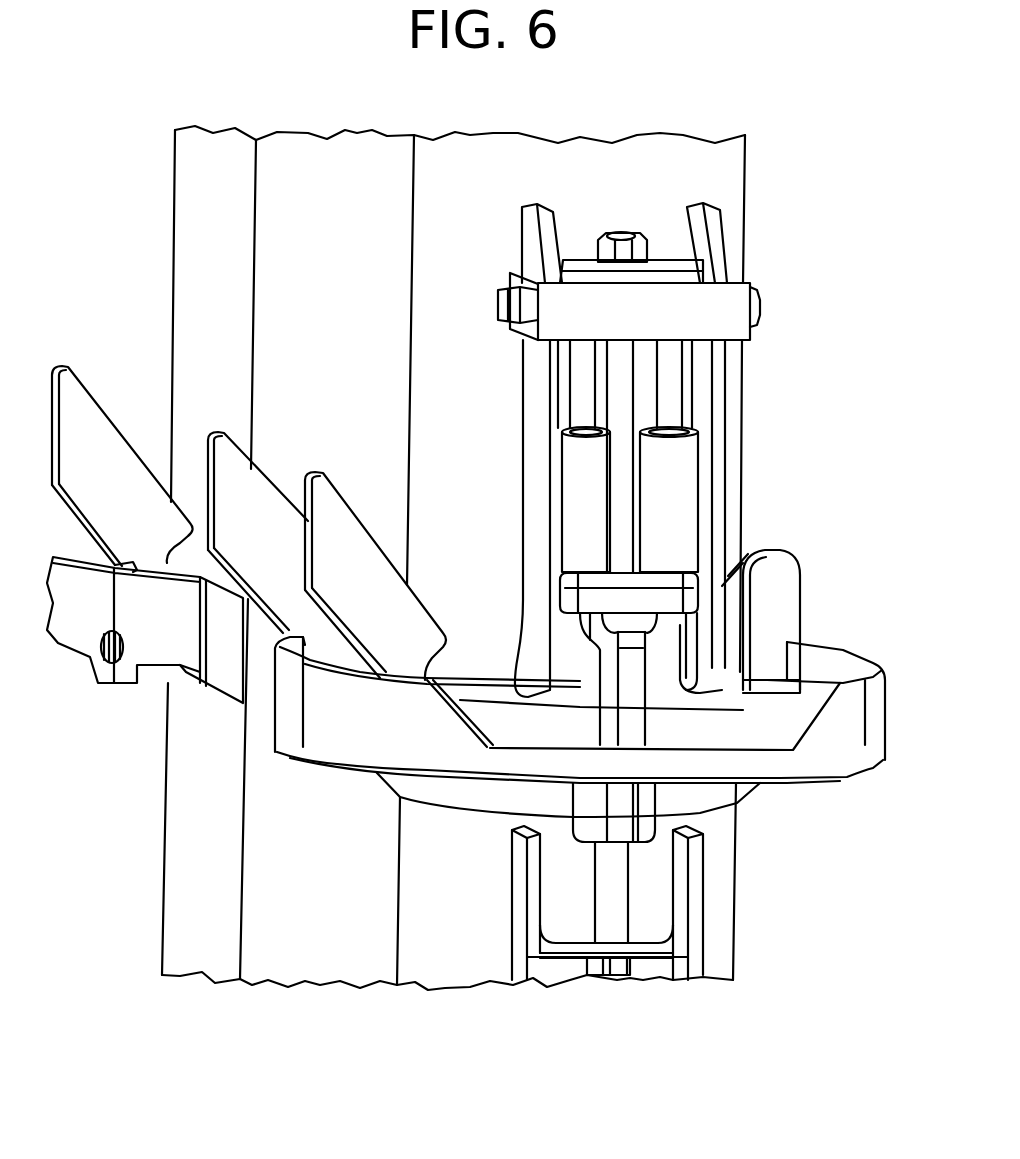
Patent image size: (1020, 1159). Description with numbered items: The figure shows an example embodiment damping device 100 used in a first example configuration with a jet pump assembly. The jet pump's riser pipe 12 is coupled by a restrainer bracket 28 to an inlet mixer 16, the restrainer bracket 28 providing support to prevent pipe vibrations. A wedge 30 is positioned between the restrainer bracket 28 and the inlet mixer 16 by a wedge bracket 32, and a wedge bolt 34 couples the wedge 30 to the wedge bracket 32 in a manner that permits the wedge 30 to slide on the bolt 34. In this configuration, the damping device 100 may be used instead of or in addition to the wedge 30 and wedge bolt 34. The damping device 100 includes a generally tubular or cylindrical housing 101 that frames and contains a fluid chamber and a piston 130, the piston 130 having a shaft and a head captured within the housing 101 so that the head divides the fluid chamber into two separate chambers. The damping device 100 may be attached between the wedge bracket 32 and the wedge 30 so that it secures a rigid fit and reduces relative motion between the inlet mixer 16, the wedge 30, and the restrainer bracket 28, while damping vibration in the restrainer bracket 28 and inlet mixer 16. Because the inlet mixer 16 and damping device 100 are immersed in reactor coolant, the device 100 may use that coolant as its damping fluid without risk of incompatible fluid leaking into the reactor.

The riser pipe 12 is at (341, 162).
The inlet mixer 16 is at (417, 358).
The wedge bracket 32 is at (723, 240).
The piston 130 is at (670, 387).
The housing 101 is at (680, 497).
The damping device 100 is at (828, 340).
The wedge 30 is at (647, 677).
The restrainer bracket 28 is at (842, 757).
The wedge bolt 34 is at (617, 923).